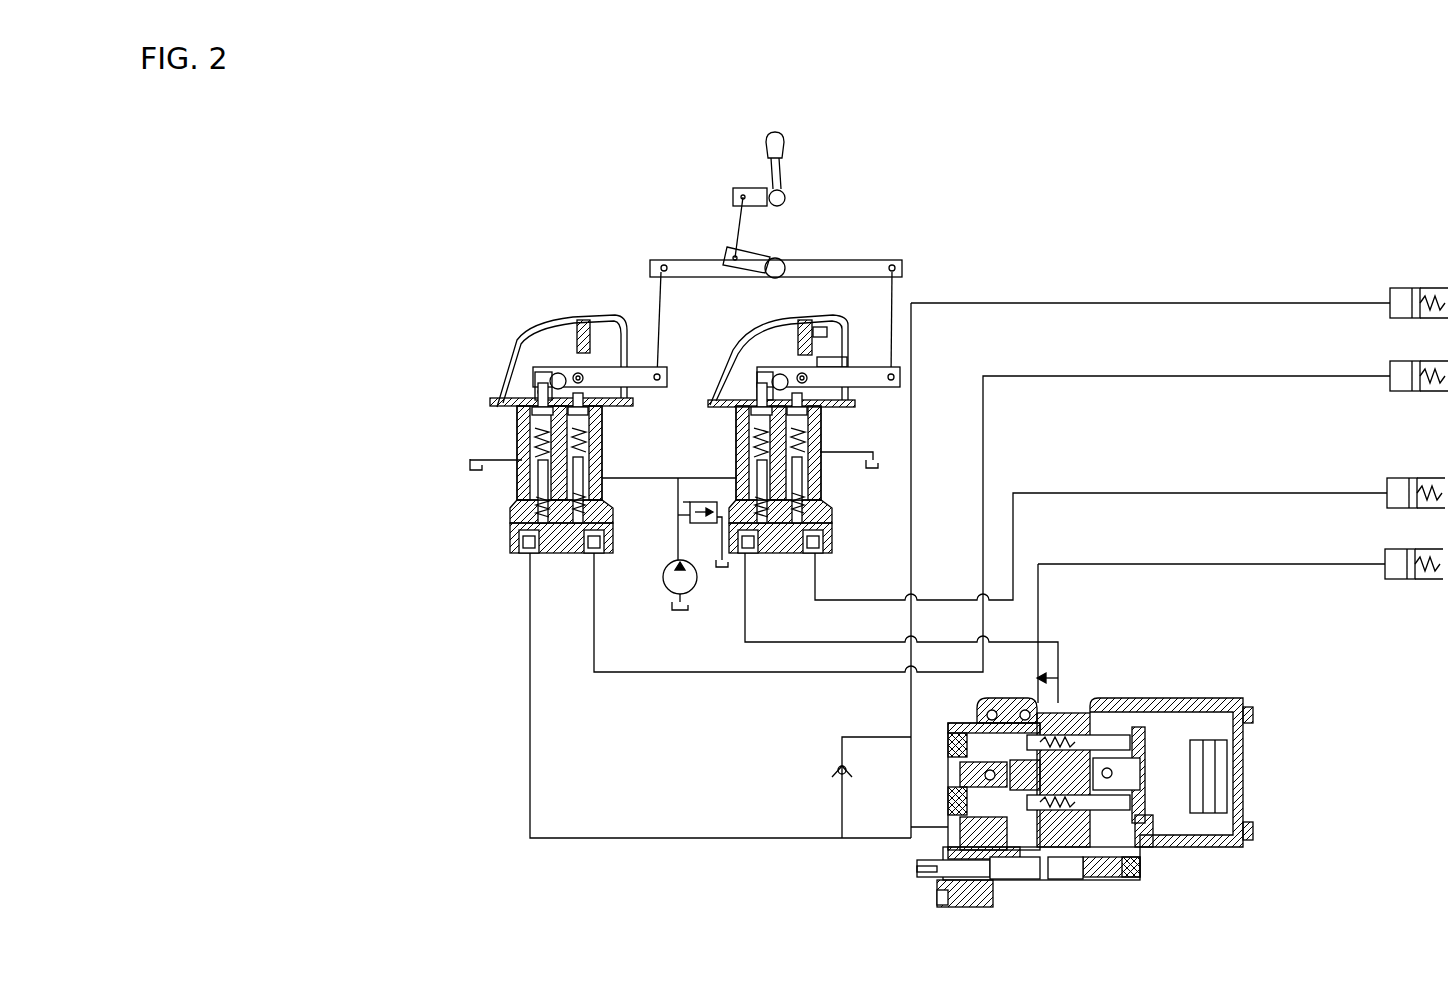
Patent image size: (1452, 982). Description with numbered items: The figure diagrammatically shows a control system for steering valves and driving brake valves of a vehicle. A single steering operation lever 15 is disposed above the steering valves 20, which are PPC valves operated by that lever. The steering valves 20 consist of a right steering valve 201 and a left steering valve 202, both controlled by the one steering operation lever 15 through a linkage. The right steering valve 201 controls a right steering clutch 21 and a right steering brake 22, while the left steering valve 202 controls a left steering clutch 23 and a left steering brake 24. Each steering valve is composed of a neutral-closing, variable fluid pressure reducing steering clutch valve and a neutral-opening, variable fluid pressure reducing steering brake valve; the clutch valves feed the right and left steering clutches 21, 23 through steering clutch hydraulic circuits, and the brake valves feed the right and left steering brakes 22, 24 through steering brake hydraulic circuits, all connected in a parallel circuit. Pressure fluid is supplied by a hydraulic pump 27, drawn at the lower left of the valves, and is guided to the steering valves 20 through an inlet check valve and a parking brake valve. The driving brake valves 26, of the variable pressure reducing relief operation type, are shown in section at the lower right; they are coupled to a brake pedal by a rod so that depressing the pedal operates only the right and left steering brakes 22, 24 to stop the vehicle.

The steering operation lever 15 is at (784, 146).
The steering valves 20 is at (650, 316).
The right steering valve 201 is at (508, 350).
The left steering valve 202 is at (737, 347).
The right steering clutch 21 is at (1405, 391).
The right steering brake 22 is at (1414, 288).
The left steering clutch 23 is at (1398, 478).
The left steering brake 24 is at (1395, 549).
The driving brake valves 26 is at (1260, 745).
The hydraulic pump 27 is at (676, 600).